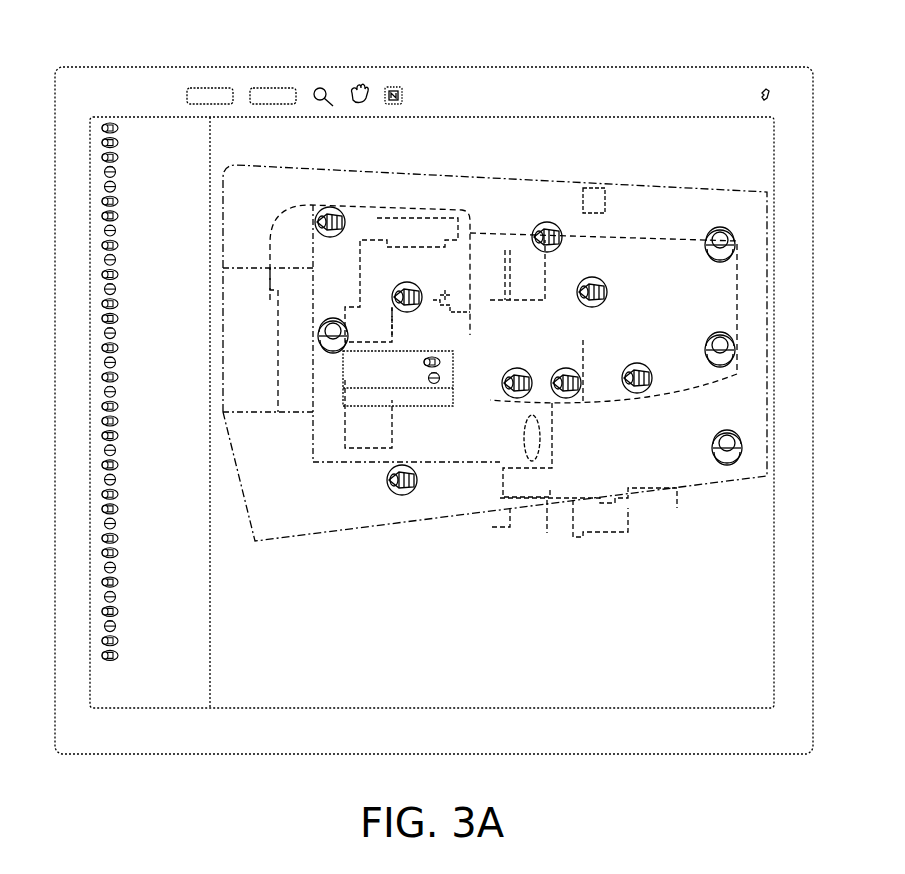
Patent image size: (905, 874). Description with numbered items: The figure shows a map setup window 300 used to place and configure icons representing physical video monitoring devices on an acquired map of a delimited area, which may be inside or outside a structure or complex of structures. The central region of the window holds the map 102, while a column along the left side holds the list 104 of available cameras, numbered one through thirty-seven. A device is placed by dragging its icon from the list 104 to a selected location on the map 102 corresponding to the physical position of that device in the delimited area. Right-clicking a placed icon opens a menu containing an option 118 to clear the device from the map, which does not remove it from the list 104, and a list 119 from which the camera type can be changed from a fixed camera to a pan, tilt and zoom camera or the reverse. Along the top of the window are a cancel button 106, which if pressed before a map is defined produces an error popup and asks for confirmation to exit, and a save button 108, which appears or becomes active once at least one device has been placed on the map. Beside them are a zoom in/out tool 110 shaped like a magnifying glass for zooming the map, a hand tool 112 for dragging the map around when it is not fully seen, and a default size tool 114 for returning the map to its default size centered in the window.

The map setup window 300 is at (441, 742).
The map 102 is at (496, 684).
The list 104 is at (151, 696).
The cancel button 106 is at (214, 87).
The save button 108 is at (276, 87).
The zoom in/out tool 110 is at (325, 87).
The hand tool 112 is at (357, 86).
The default size tool 114 is at (394, 86).
The option to clear the video monitoring device 118 is at (402, 460).
The list 119 is at (444, 382).